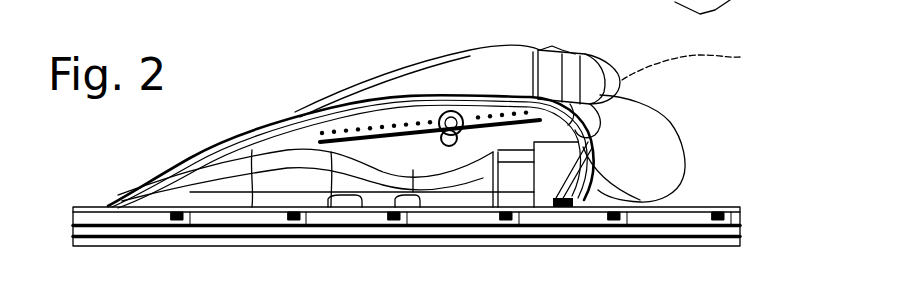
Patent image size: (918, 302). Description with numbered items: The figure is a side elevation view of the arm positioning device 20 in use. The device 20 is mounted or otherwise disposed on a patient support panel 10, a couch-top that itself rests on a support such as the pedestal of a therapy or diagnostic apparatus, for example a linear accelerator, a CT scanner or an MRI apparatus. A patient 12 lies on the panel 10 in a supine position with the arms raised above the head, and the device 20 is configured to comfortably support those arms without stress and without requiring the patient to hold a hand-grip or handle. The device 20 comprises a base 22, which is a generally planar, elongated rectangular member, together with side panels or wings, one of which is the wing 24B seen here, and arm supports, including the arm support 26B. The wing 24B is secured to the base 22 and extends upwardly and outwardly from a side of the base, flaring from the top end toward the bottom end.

The patient support panel 10 is at (676, 224).
The patient 12 is at (730, 146).
The arm positioning device 20 is at (422, 147).
The base 22 is at (226, 150).
The side panel or wing 24B is at (358, 160).
The arm support 26B is at (553, 60).